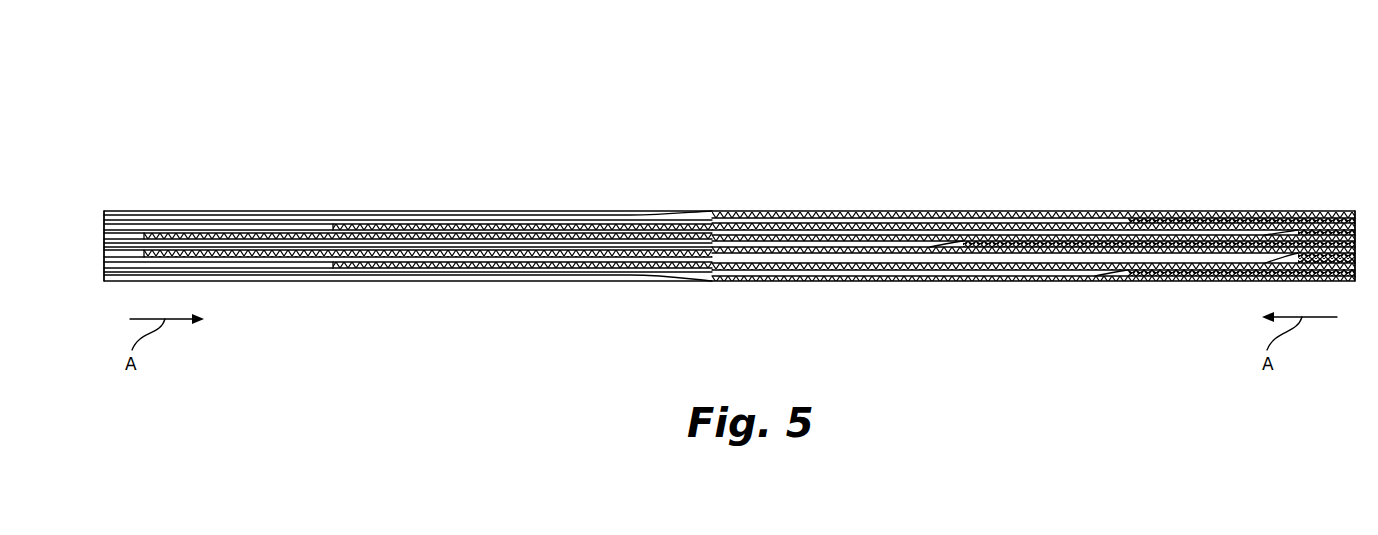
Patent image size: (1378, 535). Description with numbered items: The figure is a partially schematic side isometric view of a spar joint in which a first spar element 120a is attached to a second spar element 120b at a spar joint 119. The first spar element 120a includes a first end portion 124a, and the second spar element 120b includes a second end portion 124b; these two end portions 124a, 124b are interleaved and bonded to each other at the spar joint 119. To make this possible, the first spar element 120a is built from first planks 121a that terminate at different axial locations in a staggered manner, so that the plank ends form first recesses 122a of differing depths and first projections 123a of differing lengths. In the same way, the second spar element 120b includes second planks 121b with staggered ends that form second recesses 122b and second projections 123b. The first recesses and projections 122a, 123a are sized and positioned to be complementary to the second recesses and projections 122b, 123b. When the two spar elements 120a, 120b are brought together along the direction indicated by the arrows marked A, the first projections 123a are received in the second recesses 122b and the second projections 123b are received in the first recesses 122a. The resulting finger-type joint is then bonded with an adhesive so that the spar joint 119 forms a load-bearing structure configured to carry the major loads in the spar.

The first spar element 120a is at (167, 90).
The second spar element 120b is at (1163, 83).
The spar joint 119 is at (737, 165).
The first planks 121a is at (292, 227).
The second planks 121b is at (1164, 212).
The first recesses 122a is at (172, 223).
The second recesses 122b is at (1305, 236).
The first projections 123a is at (530, 252).
The second projections 123b is at (392, 236).
The first end portion 124a is at (592, 165).
The second end portion 124b is at (958, 146).